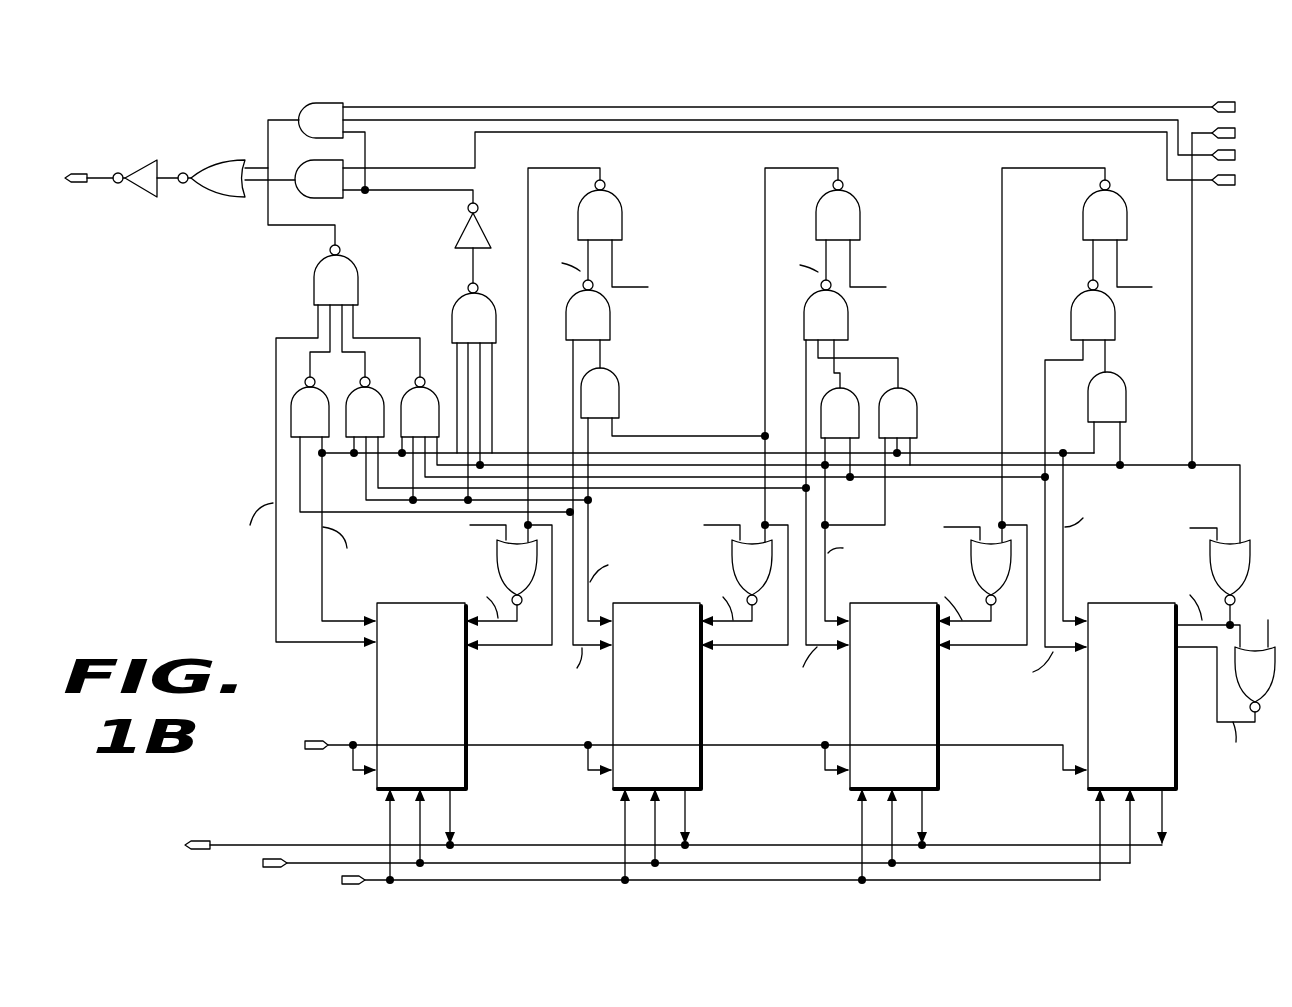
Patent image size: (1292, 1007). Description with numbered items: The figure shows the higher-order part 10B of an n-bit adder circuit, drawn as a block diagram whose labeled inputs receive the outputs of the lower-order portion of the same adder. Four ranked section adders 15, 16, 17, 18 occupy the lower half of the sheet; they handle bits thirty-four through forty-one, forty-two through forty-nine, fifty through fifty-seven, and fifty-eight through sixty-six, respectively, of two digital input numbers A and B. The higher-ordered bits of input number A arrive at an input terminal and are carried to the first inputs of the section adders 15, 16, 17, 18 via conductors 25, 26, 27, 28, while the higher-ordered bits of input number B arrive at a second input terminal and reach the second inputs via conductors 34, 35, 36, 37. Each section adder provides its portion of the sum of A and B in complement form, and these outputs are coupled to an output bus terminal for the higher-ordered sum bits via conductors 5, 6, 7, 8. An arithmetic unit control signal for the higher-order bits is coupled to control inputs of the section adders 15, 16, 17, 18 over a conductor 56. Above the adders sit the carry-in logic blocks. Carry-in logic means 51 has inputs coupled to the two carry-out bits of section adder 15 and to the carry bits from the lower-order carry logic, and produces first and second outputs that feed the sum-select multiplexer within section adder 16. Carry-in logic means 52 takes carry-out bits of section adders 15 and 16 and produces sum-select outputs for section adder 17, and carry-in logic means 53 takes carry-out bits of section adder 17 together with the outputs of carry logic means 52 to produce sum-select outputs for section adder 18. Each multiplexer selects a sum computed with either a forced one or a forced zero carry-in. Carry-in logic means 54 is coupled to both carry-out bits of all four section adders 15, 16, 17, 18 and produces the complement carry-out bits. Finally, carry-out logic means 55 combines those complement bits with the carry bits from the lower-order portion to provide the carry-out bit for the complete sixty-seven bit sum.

The adder circuit part 10B is at (124, 577).
The carry-out logic means 55 is at (160, 125).
The carry-in logic means 54 is at (275, 301).
The carry-in logic means 53 is at (519, 214).
The carry-in logic means 52 is at (750, 197).
The carry-in logic means 51 is at (990, 198).
The section adder 18 is at (467, 718).
The section adder 17 is at (702, 707).
The section adder 16 is at (848, 720).
The section adder 15 is at (1088, 716).
The conductor 56 is at (342, 745).
The conductor 37 is at (418, 813).
The conductor 36 is at (653, 813).
The conductor 35 is at (890, 813).
The conductor 34 is at (1128, 815).
The conductor 28 is at (388, 830).
The conductor 27 is at (623, 830).
The conductor 26 is at (860, 830).
The conductor 25 is at (1098, 830).
The conductor 8 is at (455, 832).
The conductor 7 is at (690, 832).
The conductor 6 is at (927, 832).
The conductor 5 is at (1167, 832).